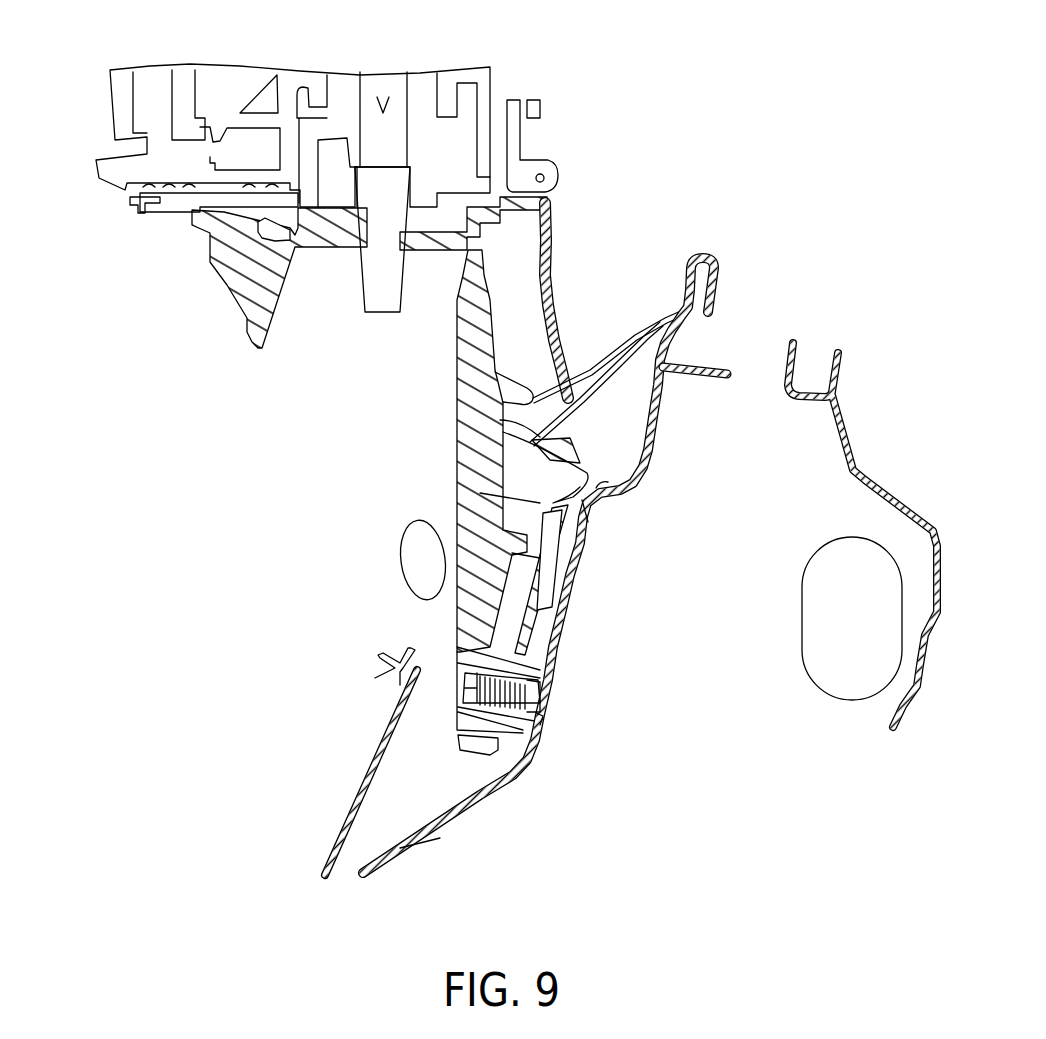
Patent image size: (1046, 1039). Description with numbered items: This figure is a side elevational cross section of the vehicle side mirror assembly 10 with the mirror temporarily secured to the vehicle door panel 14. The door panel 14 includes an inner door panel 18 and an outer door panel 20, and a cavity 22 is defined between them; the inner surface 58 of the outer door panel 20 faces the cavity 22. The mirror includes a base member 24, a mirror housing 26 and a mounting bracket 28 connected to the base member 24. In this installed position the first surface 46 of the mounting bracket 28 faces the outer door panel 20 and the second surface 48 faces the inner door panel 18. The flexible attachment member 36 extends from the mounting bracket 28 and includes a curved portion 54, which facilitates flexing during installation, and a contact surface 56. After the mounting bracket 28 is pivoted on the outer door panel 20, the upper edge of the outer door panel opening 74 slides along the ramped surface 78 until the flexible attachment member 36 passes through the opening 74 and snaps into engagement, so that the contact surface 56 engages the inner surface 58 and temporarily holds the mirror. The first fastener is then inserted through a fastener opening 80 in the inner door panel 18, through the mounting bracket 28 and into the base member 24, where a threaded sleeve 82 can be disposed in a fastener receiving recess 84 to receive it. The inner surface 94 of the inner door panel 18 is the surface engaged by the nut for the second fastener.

The vehicle side mirror assembly 10 is at (150, 694).
The door panel 14 is at (228, 789).
The inner door panel 18 is at (460, 818).
The outer door panel 20 is at (366, 775).
The cavity 22 is at (470, 776).
The base member 24 is at (455, 385).
The mirror housing 26 is at (224, 293).
The mounting bracket 28 is at (572, 568).
The flexible attachment member 36 is at (563, 440).
The first surface 46 is at (553, 643).
The second surface 48 is at (525, 616).
The curved portion 54 is at (604, 490).
The contact surface 56 is at (540, 440).
The inner surface 58 is at (590, 382).
The opening 74 is at (413, 666).
The ramped surface 78 is at (580, 453).
The fastener opening 80 is at (541, 721).
The threaded sleeve 82 is at (545, 693).
The fastener receiving recess 84 is at (465, 688).
The inner surface 94 is at (425, 838).